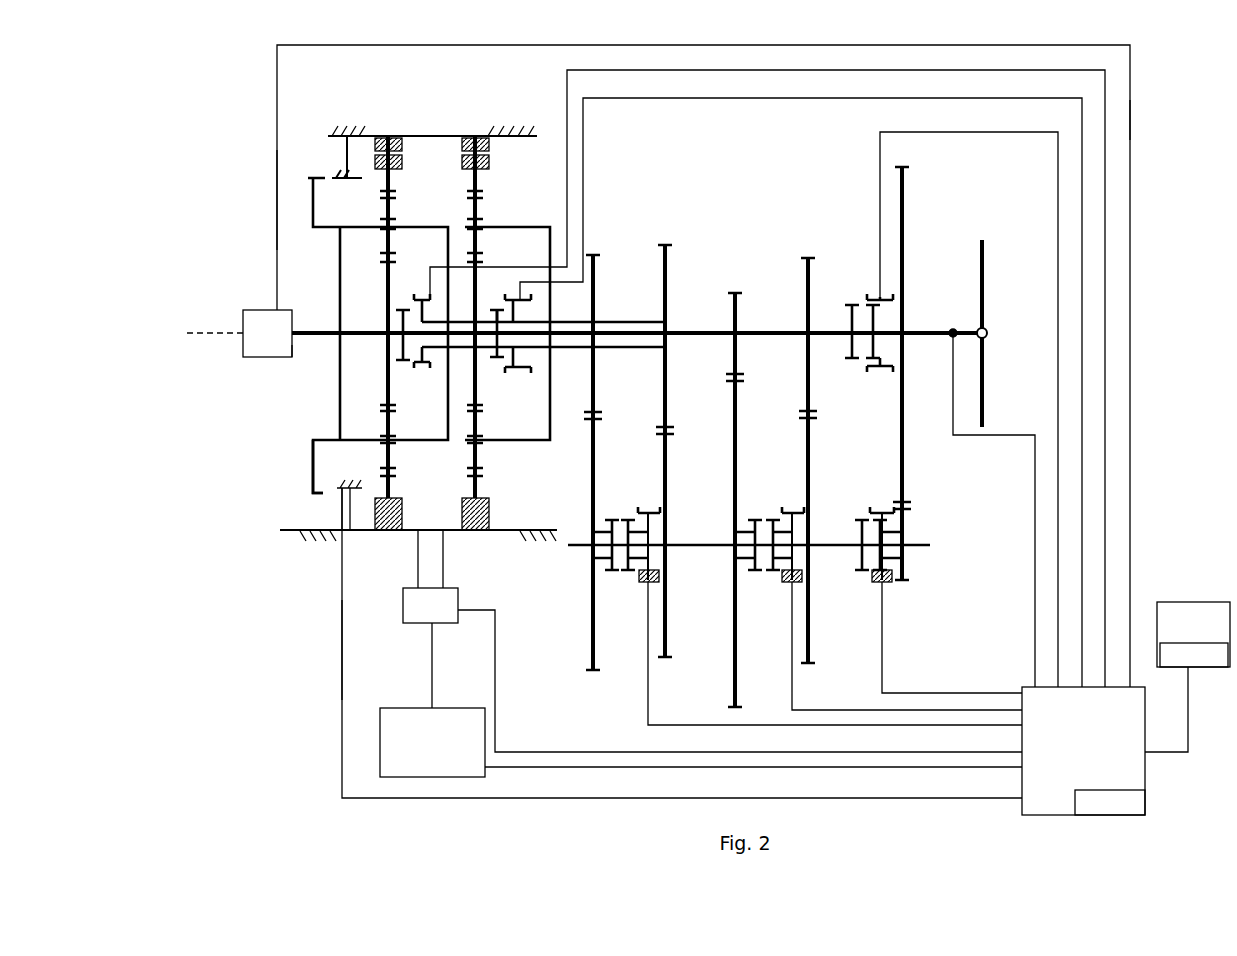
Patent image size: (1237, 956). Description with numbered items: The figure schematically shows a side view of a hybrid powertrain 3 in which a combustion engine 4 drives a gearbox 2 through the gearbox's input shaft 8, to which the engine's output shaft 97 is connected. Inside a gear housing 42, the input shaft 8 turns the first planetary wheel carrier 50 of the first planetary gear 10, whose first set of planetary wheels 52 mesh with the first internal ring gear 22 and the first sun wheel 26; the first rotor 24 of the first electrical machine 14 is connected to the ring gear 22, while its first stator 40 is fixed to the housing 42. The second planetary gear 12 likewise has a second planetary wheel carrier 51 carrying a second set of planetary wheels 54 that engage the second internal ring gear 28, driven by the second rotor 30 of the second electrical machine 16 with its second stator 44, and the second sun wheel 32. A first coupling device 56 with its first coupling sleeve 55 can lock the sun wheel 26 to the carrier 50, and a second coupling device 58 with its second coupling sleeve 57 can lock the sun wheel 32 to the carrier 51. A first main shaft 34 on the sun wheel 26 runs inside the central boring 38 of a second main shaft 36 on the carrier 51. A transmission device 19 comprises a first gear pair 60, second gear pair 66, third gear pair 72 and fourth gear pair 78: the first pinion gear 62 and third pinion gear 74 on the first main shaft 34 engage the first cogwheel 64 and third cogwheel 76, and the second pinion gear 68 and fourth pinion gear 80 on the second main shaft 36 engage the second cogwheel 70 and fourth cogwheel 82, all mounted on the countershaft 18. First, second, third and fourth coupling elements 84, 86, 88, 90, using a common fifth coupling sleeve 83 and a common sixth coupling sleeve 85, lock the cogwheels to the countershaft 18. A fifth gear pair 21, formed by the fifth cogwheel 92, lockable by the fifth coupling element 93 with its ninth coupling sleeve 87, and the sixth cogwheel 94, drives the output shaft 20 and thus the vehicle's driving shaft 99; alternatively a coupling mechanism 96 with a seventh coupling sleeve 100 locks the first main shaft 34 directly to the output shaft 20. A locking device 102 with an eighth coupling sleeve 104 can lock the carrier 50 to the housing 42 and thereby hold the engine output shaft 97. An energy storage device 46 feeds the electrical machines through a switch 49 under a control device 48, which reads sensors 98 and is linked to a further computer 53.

The gearbox 2 is at (1143, 115).
The hybrid powertrain 3 is at (327, 610).
The combustion engine 4 is at (245, 310).
The input shaft 8 is at (326, 328).
The first planetary gear 10 is at (266, 183).
The second planetary gear 12 is at (593, 173).
The first electrical machine 14 is at (268, 120).
The second electrical machine 16 is at (545, 158).
The countershaft 18 is at (721, 556).
The transmission device 19 is at (736, 186).
The output shaft 20 is at (917, 310).
The fifth gear pair 21 is at (935, 498).
The first internal ring gear 22 is at (378, 195).
The first rotor 24 is at (400, 140).
The first sun wheel 26 is at (385, 360).
The second internal ring gear 28 is at (484, 193).
The second rotor 30 is at (464, 140).
The second sun wheel 32 is at (442, 301).
The first main shaft 34 is at (778, 328).
The second main shaft 36 is at (584, 350).
The central boring 38 is at (690, 328).
The first stator 40 is at (362, 133).
The gear housing 42 is at (462, 138).
The second stator 44 is at (494, 133).
The energy storage device 46 is at (460, 708).
The control device 48 is at (1024, 686).
The switch 49 is at (418, 626).
The first planetary wheel carrier 50 is at (340, 238).
The second planetary wheel carrier 51 is at (592, 420).
The first set of planetary wheels 52 is at (396, 238).
The computer 53 is at (1205, 602).
The second set of planetary wheels 54 is at (484, 238).
The first coupling sleeve 55 is at (424, 372).
The first coupling device 56 is at (400, 316).
The second coupling sleeve 57 is at (517, 374).
The second coupling device 58 is at (535, 303).
The first gear pair 60 is at (737, 272).
The first pinion gear 62 is at (741, 366).
The first cogwheel 64 is at (745, 420).
The second gear pair 66 is at (669, 220).
The second pinion gear 68 is at (672, 370).
The second cogwheel 70 is at (672, 455).
The third gear pair 72 is at (810, 226).
The third pinion gear 74 is at (813, 372).
The third cogwheel 76 is at (813, 496).
The fourth gear pair 78 is at (598, 230).
The fourth pinion gear 80 is at (600, 372).
The fourth cogwheel 82 is at (660, 431).
The fifth coupling sleeve 83 is at (792, 511).
The first coupling element 84 is at (741, 577).
The sixth coupling sleeve 85 is at (649, 511).
The second coupling element 86 is at (660, 577).
The ninth coupling sleeve 87 is at (882, 511).
The third coupling element 88 is at (805, 578).
The fourth coupling element 90 is at (602, 590).
The fifth cogwheel 92 is at (910, 510).
The fifth coupling element 93 is at (898, 573).
The sixth cogwheel 94 is at (906, 420).
The coupling mechanism 96 is at (848, 284).
The output shaft of the combustion engine 97 is at (300, 348).
The sensors 98 is at (955, 325).
The driving shaft 99 is at (987, 284).
The seventh coupling sleeve 100 is at (883, 372).
The locking device 102 is at (313, 493).
The eighth coupling sleeve 104 is at (337, 498).